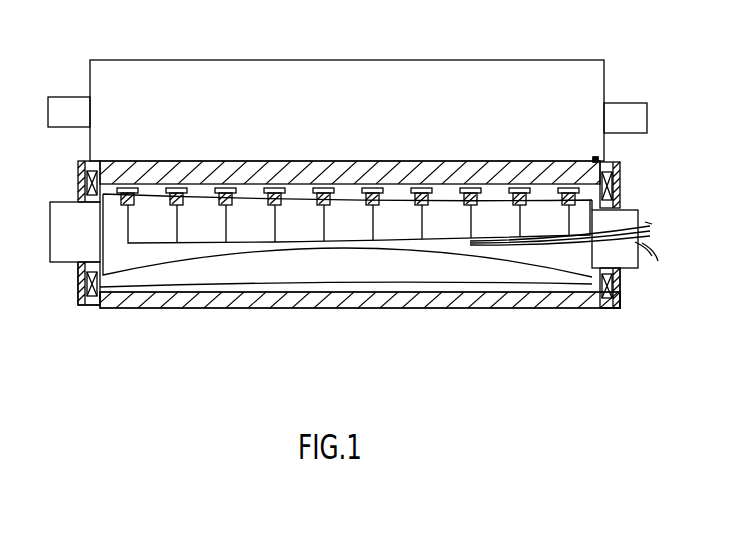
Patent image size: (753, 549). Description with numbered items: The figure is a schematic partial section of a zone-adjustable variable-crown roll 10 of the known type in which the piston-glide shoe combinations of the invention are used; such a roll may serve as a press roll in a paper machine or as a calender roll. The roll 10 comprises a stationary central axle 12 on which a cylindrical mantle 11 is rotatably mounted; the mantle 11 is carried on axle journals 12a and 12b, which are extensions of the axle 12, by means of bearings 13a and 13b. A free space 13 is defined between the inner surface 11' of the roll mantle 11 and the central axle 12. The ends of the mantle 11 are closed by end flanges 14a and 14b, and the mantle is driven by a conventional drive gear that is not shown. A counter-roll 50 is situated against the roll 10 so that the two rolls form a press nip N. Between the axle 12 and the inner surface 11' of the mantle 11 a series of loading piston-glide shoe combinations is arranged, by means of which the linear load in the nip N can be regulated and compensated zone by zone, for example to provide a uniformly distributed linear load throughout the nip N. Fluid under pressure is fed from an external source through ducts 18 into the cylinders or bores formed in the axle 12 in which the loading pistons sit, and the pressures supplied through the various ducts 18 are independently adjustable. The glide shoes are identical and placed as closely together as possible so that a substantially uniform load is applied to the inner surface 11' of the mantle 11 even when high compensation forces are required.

The counter-roll 50 is at (425, 72).
The variable-crown roll 10 is at (182, 297).
The cylindrical mantle 11 is at (360, 322).
The inner surface of the roll mantle 11' is at (346, 317).
The stationary central axle 12 is at (357, 273).
The axle journal 12a is at (52, 247).
The axle journal 12b is at (627, 262).
The free space 13 is at (78, 188).
The bearing 13a is at (90, 304).
The bearing 13b is at (606, 308).
The end flange 14a is at (80, 295).
The end flange 14b is at (623, 305).
The ducts 18 is at (193, 248).
The press nip N is at (598, 160).